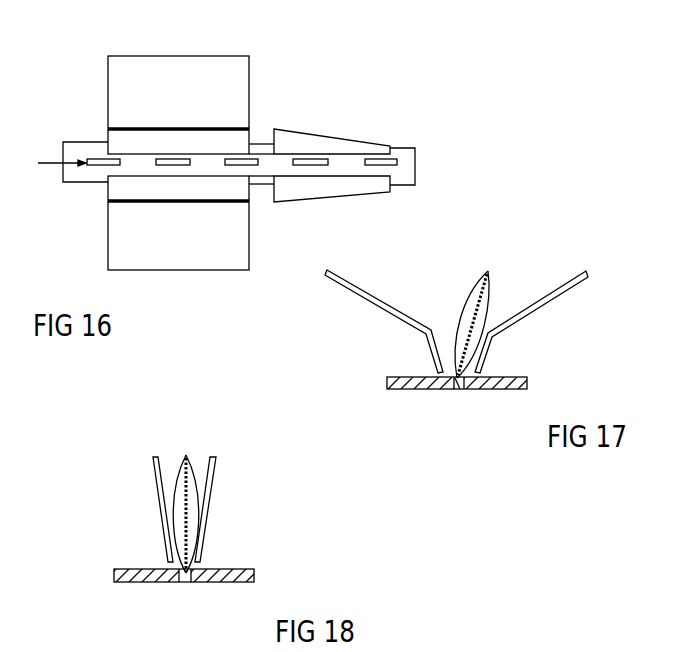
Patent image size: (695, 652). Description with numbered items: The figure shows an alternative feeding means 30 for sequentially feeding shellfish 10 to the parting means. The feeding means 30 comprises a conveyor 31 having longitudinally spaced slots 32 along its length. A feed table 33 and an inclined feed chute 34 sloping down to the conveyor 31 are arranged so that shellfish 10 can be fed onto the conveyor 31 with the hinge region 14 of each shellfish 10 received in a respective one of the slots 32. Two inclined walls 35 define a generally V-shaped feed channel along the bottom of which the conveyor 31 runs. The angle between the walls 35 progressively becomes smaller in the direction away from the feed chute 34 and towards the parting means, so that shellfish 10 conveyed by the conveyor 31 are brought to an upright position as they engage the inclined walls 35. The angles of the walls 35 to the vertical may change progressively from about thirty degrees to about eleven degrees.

In FIG. 17, the shellfish 10 is at (497, 250).
In FIG. 18, the shellfish 10 is at (187, 445).
In FIG. 17, the hinge region 14 is at (463, 388).
In FIG. 18, the hinge region 14 is at (187, 583).
In FIG. 16, the feeding means 30 is at (88, 127).
In FIG. 16, the conveyor 31 is at (400, 158).
In FIG. 17, the conveyor 31 is at (507, 375).
In FIG. 18, the conveyor 31 is at (230, 570).
In FIG. 16, the slots 32 is at (102, 166).
In FIG. 17, the slots 32 is at (455, 390).
In FIG. 16, the feed table 33 is at (208, 70).
In FIG. 17, the feed table 33 is at (353, 280).
In FIG. 16, the inclined feed chute 34 is at (233, 142).
In FIG. 17, the inclined feed chute 34 is at (447, 335).
In FIG. 16, the inclined walls 35 is at (353, 150).
In FIG. 18, the inclined walls 35 is at (165, 458).